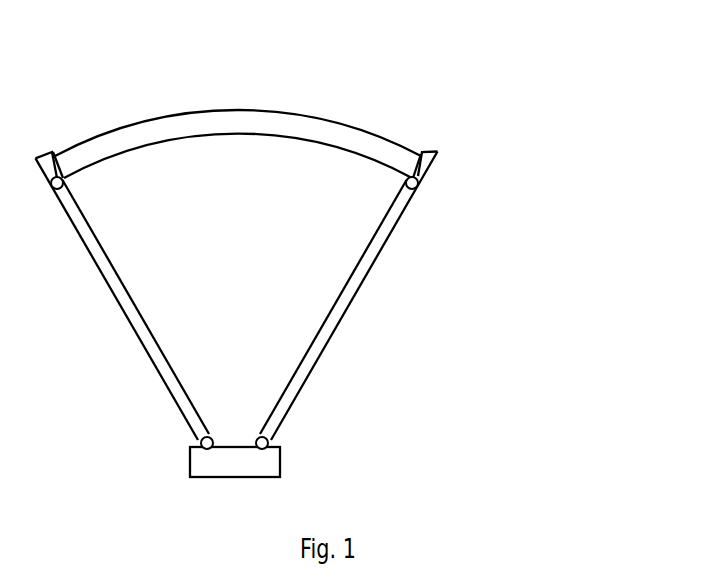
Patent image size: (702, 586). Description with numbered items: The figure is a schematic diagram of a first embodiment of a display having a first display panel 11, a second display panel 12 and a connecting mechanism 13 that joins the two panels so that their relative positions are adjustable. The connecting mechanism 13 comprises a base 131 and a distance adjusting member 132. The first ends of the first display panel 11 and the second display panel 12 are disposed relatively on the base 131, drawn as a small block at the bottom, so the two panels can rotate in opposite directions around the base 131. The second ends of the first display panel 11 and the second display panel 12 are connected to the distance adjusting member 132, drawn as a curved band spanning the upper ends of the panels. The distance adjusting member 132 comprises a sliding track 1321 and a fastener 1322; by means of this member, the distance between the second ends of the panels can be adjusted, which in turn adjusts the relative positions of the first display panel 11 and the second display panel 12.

The first display panel 11 is at (122, 293).
The second display panel 12 is at (358, 282).
The connecting mechanism 13 is at (274, 338).
The base 131 is at (222, 463).
The distance adjusting member 132 is at (344, 95).
The sliding track 1321 is at (365, 143).
The fastener 1322 is at (420, 165).